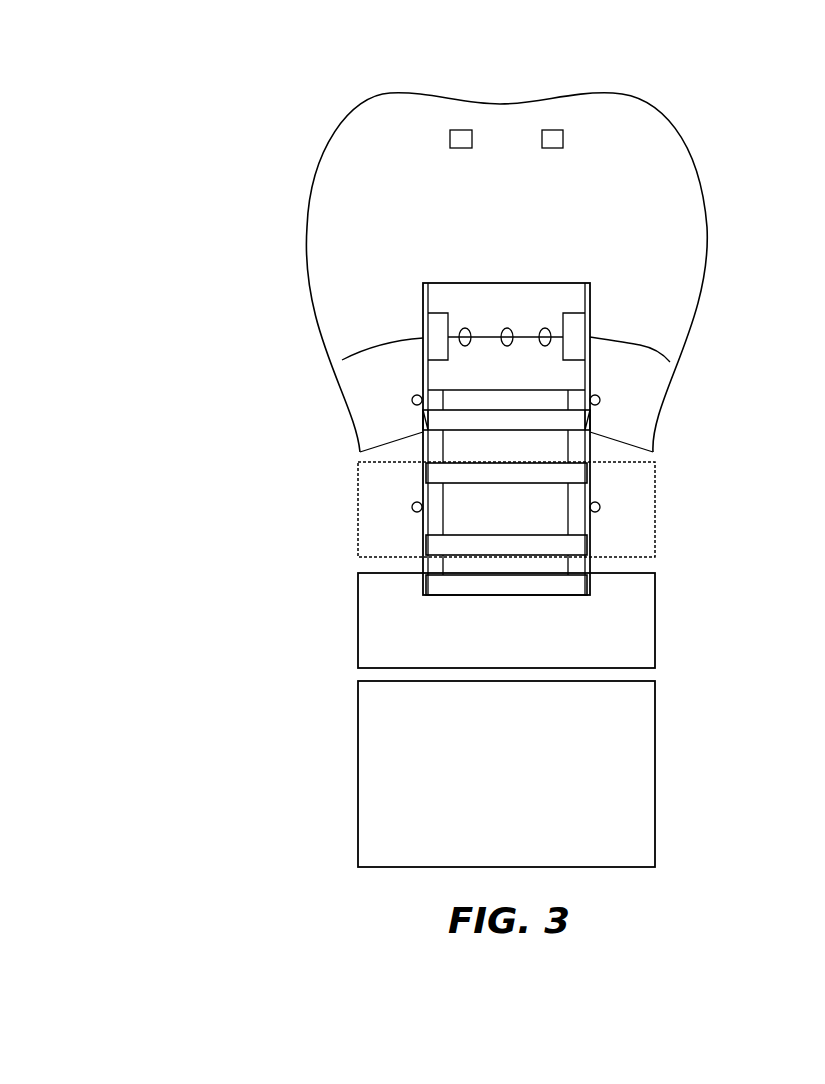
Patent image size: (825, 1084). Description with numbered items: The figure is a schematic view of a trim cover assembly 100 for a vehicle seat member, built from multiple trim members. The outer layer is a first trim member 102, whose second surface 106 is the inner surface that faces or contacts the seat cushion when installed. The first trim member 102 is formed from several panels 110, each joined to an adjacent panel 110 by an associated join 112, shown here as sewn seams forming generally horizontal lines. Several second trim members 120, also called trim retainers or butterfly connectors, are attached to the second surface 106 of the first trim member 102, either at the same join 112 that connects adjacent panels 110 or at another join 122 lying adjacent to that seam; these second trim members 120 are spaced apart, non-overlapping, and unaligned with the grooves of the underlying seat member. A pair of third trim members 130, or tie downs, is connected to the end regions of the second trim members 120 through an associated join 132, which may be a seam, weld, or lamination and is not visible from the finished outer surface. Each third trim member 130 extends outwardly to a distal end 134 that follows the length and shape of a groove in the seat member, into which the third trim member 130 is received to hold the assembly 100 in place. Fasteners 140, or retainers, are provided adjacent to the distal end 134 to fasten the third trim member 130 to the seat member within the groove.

The trim cover assembly 100 is at (283, 603).
The first trim member 102 is at (363, 373).
The second surface 106 is at (360, 148).
The panel 110 is at (650, 760).
The join 112 is at (640, 345).
The second trim member 120 is at (525, 355).
The join 122 is at (482, 330).
The third trim member 130 is at (423, 450).
The join 132 is at (425, 303).
The distal end 134 is at (421, 492).
The fastener 140 is at (595, 503).